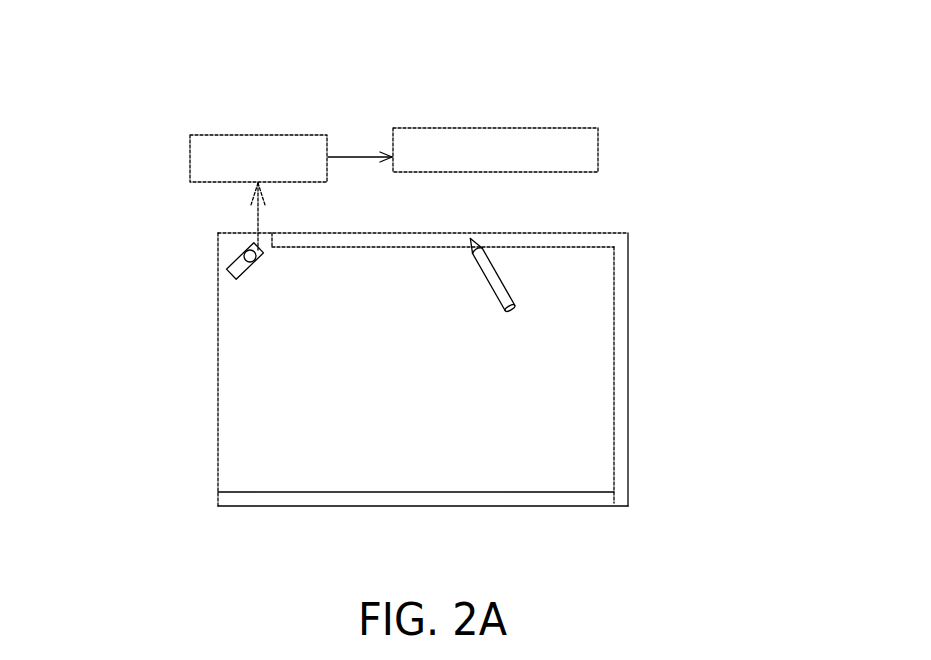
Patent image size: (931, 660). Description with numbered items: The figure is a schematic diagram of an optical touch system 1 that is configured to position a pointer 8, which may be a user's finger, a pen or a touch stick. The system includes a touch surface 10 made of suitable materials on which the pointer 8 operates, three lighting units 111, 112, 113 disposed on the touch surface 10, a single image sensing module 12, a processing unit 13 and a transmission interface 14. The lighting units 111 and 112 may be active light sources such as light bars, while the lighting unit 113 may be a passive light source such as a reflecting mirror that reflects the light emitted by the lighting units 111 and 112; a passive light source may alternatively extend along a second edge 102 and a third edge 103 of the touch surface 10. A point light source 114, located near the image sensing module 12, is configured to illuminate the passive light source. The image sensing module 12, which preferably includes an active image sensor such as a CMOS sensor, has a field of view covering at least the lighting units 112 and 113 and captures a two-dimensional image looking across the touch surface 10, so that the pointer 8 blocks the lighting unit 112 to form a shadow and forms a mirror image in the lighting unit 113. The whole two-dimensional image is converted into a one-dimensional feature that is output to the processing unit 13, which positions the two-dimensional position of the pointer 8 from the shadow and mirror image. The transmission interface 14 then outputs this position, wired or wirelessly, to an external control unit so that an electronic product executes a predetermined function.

The optical touch system 1 is at (723, 108).
The pointer 8 is at (490, 333).
The touch surface 10 is at (255, 382).
The image sensing module 12 is at (237, 257).
The processing unit 13 is at (262, 133).
The transmission interface 14 is at (520, 128).
The second edge 102 is at (628, 382).
The third edge 103 is at (263, 507).
The lighting unit 111 is at (572, 240).
The lighting unit 112 is at (623, 302).
The lighting unit 113 is at (563, 498).
The point light source 114 is at (245, 250).